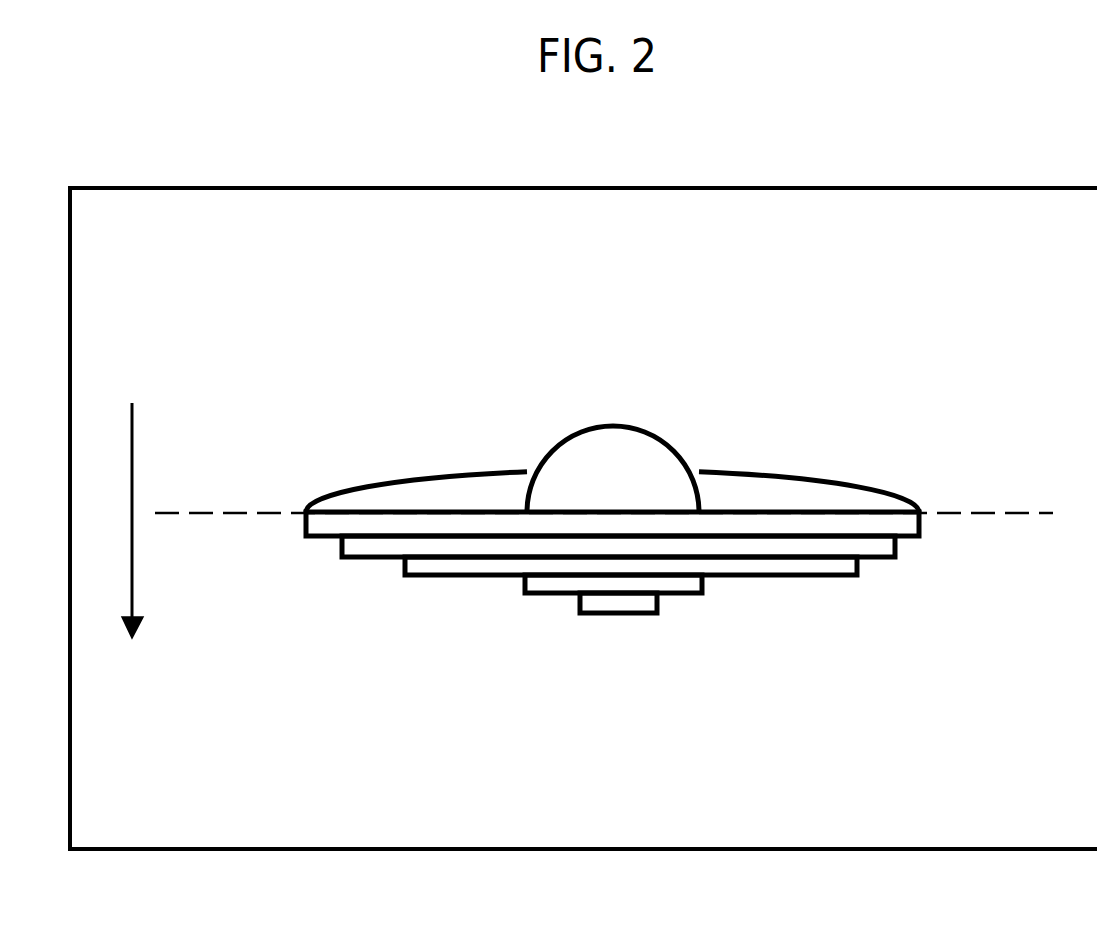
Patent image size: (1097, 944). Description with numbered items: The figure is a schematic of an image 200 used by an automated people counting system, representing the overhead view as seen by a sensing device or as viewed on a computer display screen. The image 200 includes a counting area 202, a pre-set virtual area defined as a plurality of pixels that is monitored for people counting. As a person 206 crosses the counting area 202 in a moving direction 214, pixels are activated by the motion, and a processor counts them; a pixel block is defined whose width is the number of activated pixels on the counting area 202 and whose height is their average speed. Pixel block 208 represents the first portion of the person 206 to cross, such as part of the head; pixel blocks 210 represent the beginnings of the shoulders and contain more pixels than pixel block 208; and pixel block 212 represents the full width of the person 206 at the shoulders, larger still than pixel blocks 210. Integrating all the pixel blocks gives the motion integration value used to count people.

The image 200 is at (843, 188).
The counting area 202 is at (207, 510).
The person 206 is at (770, 473).
The pixel block 208 is at (657, 620).
The pixel blocks 210 is at (705, 600).
The pixel block 212 is at (925, 528).
The moving direction 214 is at (133, 585).